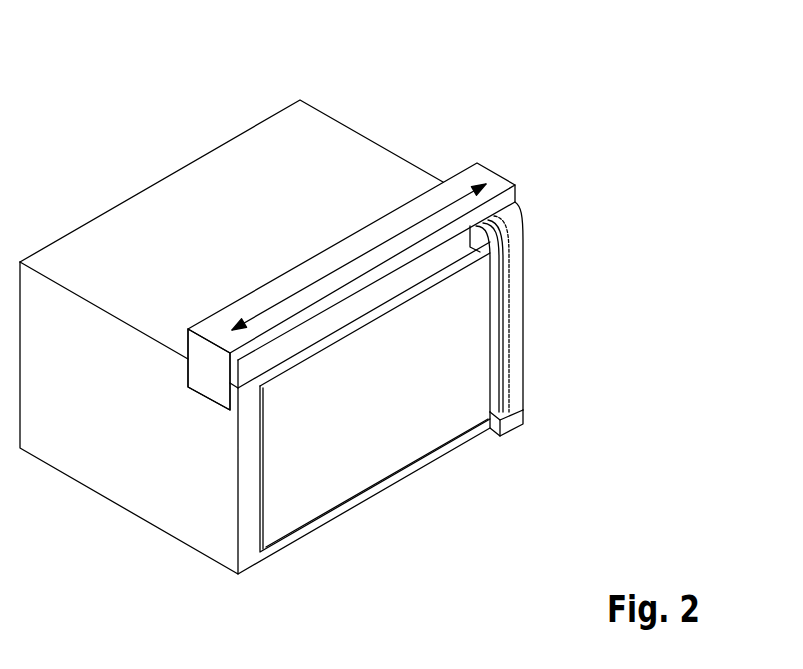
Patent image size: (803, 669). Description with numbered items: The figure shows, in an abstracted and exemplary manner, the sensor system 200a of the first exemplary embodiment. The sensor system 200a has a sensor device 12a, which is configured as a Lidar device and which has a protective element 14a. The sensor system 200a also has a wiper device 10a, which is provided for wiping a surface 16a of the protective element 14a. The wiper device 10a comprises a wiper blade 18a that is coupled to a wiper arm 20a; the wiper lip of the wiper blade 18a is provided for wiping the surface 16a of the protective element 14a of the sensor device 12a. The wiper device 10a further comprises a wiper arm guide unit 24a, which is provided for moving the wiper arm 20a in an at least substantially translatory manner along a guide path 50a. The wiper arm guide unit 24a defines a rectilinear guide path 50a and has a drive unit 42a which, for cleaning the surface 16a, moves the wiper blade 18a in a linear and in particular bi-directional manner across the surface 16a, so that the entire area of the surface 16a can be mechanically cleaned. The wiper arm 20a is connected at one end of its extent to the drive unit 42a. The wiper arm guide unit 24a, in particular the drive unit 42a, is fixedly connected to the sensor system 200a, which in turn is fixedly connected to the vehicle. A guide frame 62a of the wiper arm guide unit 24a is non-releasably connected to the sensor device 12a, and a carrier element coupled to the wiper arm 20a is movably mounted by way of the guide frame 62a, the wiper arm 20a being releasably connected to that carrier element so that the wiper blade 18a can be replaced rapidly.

The wiper device 10a is at (347, 295).
The sensor device 12a is at (380, 100).
The protective element 14a is at (325, 497).
The surface 16a is at (370, 442).
The wiper blade 18a is at (548, 342).
The wiper arm 20a is at (557, 319).
The wiper arm guide unit 24a is at (511, 148).
The drive unit 42a is at (392, 238).
The guide path 50a is at (325, 272).
The guide frame 62a is at (457, 182).
The sensor system 200a is at (392, 228).